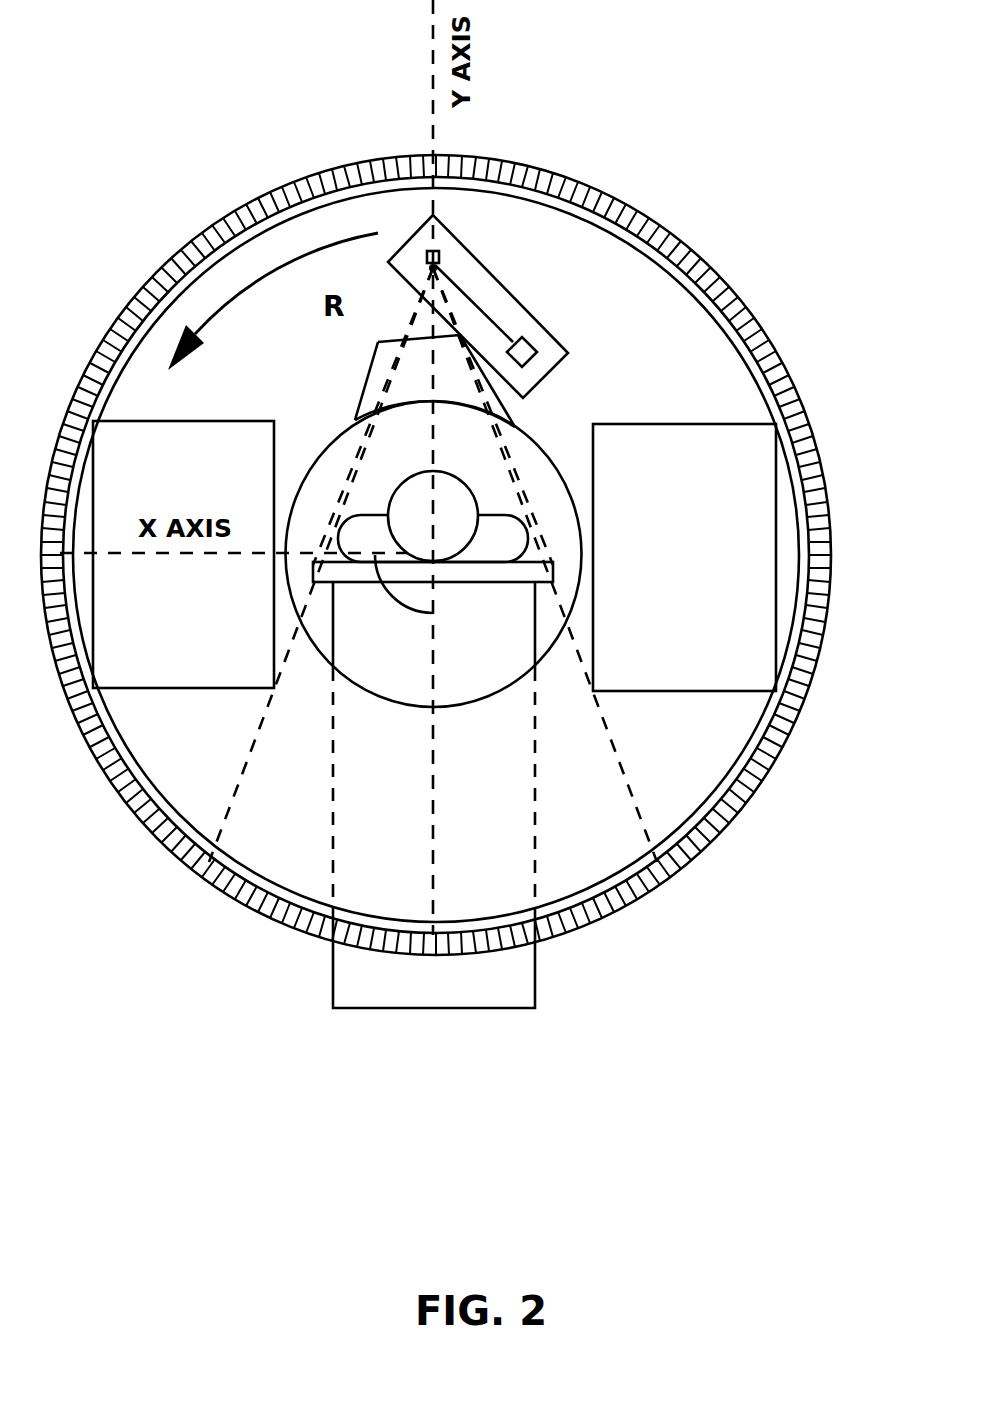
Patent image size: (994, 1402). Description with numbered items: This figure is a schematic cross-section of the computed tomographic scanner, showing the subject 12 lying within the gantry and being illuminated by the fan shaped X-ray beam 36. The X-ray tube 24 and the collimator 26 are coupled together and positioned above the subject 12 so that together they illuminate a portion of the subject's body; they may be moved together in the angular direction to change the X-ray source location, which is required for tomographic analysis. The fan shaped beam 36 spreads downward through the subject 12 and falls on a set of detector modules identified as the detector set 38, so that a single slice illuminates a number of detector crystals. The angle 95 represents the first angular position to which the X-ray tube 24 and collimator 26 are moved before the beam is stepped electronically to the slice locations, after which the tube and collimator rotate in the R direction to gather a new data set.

The subject 12 is at (468, 482).
The X-ray tube 24 is at (497, 277).
The collimator 26 is at (369, 375).
The fan shaped X-ray beam 36 is at (610, 743).
The detector set 38 is at (663, 910).
The angle 95 is at (392, 600).